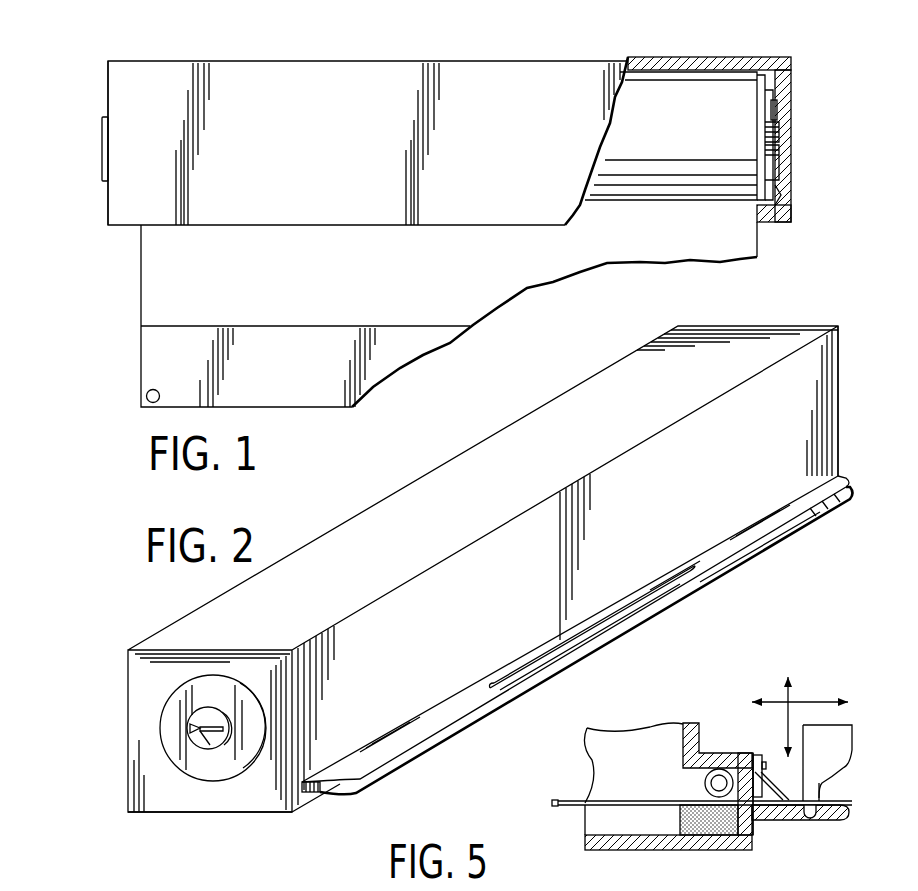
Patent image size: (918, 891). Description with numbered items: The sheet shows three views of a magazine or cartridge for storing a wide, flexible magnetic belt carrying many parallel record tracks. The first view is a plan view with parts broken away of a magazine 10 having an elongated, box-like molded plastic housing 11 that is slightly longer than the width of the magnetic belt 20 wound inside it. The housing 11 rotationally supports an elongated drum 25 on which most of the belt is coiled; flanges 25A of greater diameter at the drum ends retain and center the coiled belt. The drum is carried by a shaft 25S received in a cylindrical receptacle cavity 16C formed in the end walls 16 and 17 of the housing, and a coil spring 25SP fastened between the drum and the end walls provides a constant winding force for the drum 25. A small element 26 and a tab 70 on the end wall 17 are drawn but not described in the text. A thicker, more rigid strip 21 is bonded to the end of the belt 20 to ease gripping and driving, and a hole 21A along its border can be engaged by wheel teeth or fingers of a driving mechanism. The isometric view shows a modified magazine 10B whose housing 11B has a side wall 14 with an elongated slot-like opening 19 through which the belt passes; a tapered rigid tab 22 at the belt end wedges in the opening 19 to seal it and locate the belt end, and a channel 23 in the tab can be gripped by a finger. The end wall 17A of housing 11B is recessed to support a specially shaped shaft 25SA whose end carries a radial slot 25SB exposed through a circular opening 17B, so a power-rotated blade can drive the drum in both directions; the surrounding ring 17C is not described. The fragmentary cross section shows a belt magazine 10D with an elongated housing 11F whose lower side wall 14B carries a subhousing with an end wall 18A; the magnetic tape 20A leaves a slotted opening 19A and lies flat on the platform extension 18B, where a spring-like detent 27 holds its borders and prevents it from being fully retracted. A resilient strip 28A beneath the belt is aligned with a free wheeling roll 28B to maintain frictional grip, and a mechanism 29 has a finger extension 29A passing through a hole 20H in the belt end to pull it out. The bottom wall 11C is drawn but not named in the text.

In FIG. 1, the magazine 10 is at (75, 54).
In FIG. 1, the housing 11 is at (212, 62).
In FIG. 1, the end wall 17 is at (108, 91).
In FIG. 1, the tab 70 is at (102, 149).
In FIG. 1, the end wall 16 is at (790, 74).
In FIG. 1, the cylindrical receptacle cavity 16C is at (788, 186).
In FIG. 1, the drum 25 is at (685, 112).
In FIG. 1, the flange 25A is at (762, 97).
In FIG. 1, the spring seat 26 is at (774, 114).
In FIG. 1, the coil spring 25SP is at (780, 133).
In FIG. 1, the shaft 25S is at (790, 163).
In FIG. 1, the magnetic belt 20 is at (167, 291).
In FIG. 1, the strip 21 is at (153, 372).
In FIG. 1, the hole 21A is at (146, 397).
In FIG. 2, the magazine 10B is at (115, 631).
In FIG. 2, the housing 11B is at (222, 620).
In FIG. 2, the side wall 14 is at (822, 359).
In FIG. 2, the opening 19 is at (812, 480).
In FIG. 2, the tab 22 is at (822, 516).
In FIG. 2, the channel 23 is at (677, 576).
In FIG. 2, the end wall 17A is at (243, 800).
In FIG. 2, the circular opening 17B is at (203, 742).
In FIG. 2, the outer ring 17C is at (180, 703).
In FIG. 2, the shaft 25SA is at (200, 726).
In FIG. 2, the slot 25SB is at (200, 745).
In FIG. 5, the belt magazine 10D is at (586, 758).
In FIG. 5, the housing 11F is at (620, 742).
In FIG. 5, the bottom wall 11C is at (715, 840).
In FIG. 5, the strip of resilient material 28A is at (702, 823).
In FIG. 5, the roll 28B is at (705, 783).
In FIG. 5, the lower side wall 14B is at (692, 740).
In FIG. 5, the detent 27 is at (768, 780).
In FIG. 5, the end wall 18A is at (755, 755).
In FIG. 5, the platform extension 18B is at (770, 817).
In FIG. 5, the opening 19A is at (753, 820).
In FIG. 5, the finger extension 29A is at (815, 820).
In FIG. 5, the magnetic tape 20A is at (556, 808).
In FIG. 5, the hole 20H is at (817, 797).
In FIG. 5, the mechanism 29 is at (818, 735).